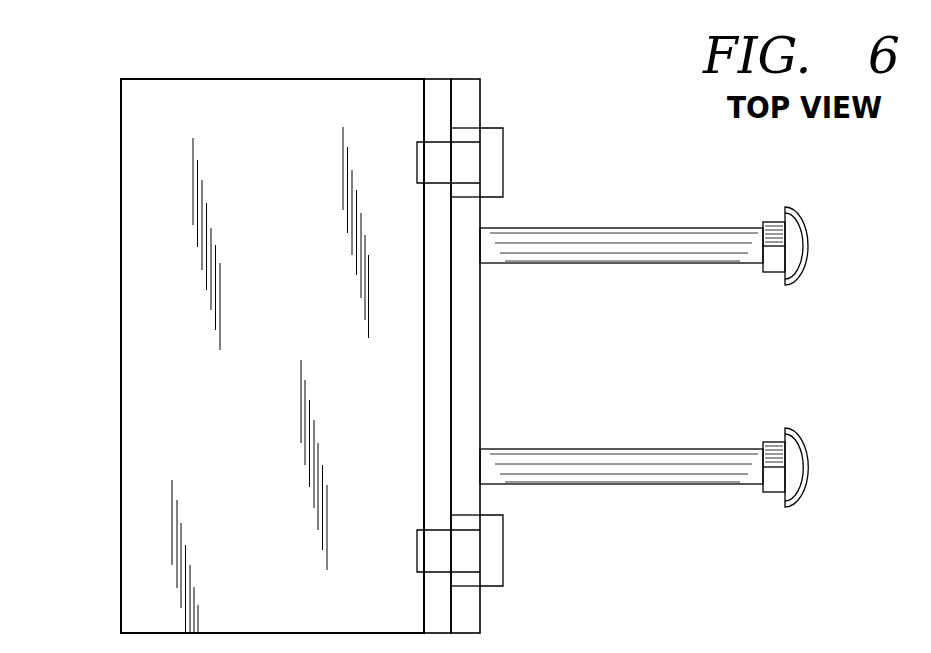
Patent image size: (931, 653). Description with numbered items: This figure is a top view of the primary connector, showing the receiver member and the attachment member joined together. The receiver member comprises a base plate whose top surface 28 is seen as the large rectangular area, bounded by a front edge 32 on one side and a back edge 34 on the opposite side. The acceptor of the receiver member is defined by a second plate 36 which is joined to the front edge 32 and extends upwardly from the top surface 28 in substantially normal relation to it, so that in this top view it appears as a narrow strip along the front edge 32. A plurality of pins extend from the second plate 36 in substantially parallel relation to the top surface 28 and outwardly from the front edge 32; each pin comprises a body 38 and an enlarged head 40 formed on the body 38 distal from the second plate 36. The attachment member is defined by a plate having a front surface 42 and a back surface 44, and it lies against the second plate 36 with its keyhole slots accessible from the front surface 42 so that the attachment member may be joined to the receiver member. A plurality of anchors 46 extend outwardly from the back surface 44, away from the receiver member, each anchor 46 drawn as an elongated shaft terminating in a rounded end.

The top surface 28 is at (332, 283).
The front edge 32 is at (424, 428).
The back edge 34 is at (121, 213).
The second plate 36 is at (436, 79).
The body 38 is at (417, 167).
The enlarged head 40 is at (503, 180).
The front surface 42 is at (452, 340).
The back surface 44 is at (480, 105).
The anchors 46 is at (725, 252).